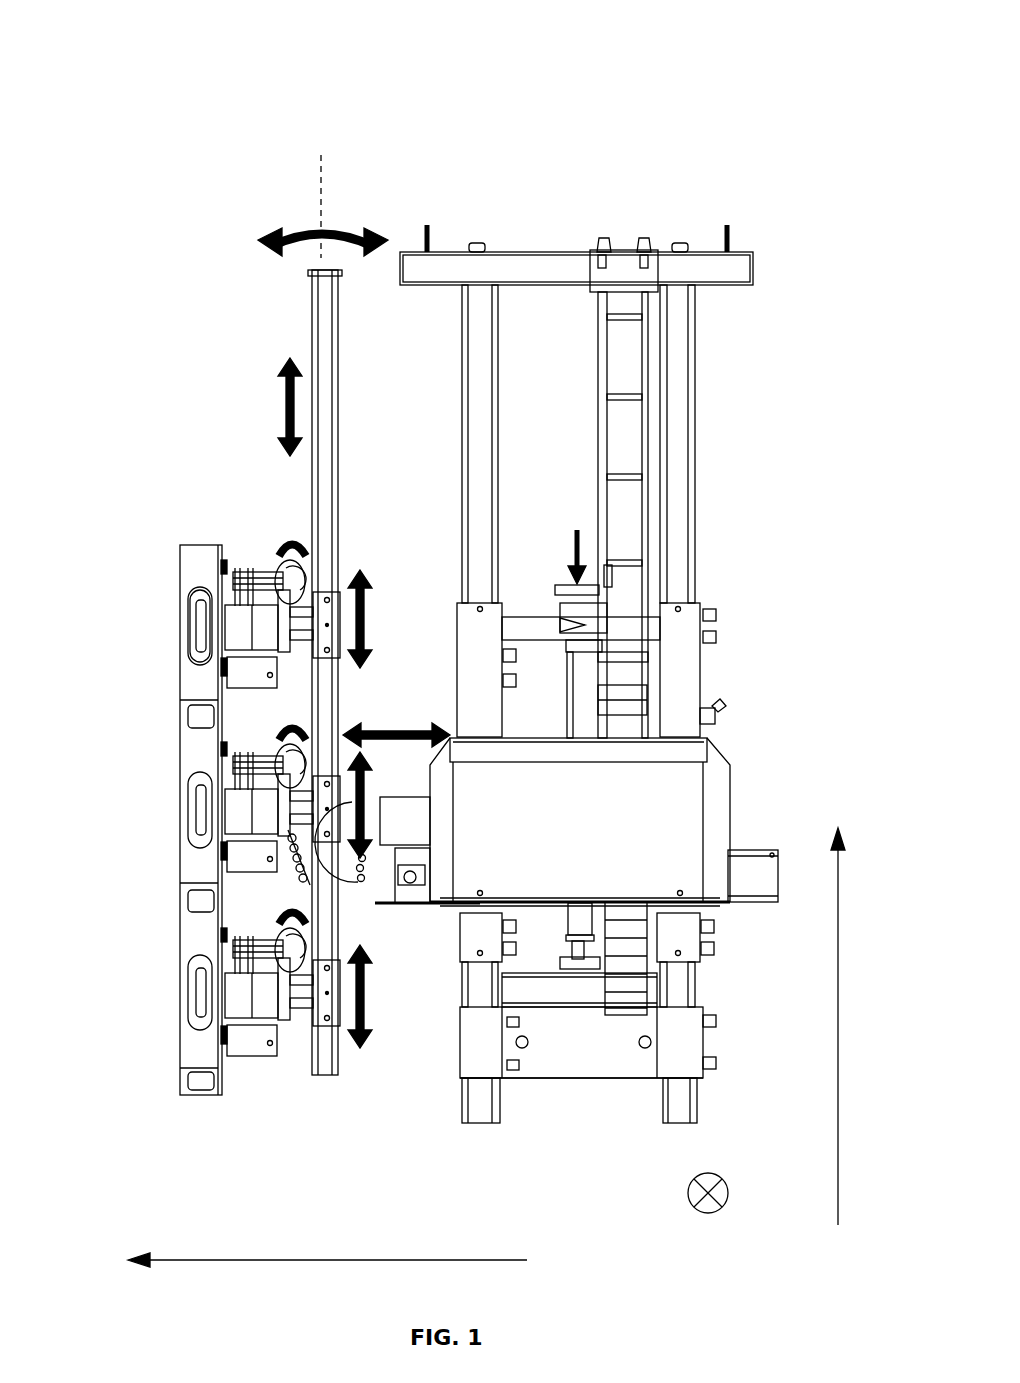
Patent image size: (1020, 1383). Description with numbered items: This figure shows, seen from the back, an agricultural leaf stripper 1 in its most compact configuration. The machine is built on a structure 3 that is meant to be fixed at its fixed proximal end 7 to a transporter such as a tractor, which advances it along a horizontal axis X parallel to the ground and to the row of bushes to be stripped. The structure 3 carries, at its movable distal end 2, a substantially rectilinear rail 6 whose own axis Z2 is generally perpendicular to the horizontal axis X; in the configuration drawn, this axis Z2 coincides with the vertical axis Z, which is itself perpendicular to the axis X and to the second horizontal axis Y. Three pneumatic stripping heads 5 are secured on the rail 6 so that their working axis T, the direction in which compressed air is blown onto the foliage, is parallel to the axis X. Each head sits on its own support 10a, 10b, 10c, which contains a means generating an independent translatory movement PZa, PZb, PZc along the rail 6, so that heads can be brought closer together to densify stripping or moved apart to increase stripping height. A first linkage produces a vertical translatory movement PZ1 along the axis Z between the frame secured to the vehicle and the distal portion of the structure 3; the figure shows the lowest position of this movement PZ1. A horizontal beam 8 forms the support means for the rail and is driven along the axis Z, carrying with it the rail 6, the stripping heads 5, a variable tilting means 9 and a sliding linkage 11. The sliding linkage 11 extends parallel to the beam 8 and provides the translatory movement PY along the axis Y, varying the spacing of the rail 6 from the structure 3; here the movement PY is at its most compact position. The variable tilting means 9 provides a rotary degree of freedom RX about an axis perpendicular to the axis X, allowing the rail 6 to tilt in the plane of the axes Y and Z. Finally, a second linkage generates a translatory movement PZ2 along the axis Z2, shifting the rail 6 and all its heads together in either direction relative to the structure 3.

The agricultural leaf stripper 1 is at (525, 90).
The movable distal end 2 is at (607, 674).
The structure 3 is at (595, 1130).
The stripping head 5 is at (195, 768).
The rail 6 is at (215, 672).
The fixed proximal end 7 is at (566, 1094).
The beam 8 is at (771, 897).
The variable tilting means 9 is at (202, 844).
The support 10a is at (231, 599).
The support 10b is at (264, 794).
The support 10c is at (222, 975).
The sliding linkage 11 is at (277, 964).
The working axis T is at (198, 629).
The second axis Z2 is at (321, 192).
The rotary degree of freedom RX is at (348, 217).
The translatory movement of second linkage PZ2 is at (193, 407).
The translatory movement of first linkage PZ1 is at (484, 512).
The translatory movement of first stripping head PZa is at (571, 482).
The translatory movement of second stripping head PZb is at (601, 775).
The translatory movement of third stripping head PZc is at (598, 853).
The translatory movement of third linkage PY is at (624, 611).
The vertical axis Z is at (848, 1026).
The second horizontal axis Y is at (327, 1244).
The horizontal axis X is at (728, 1193).